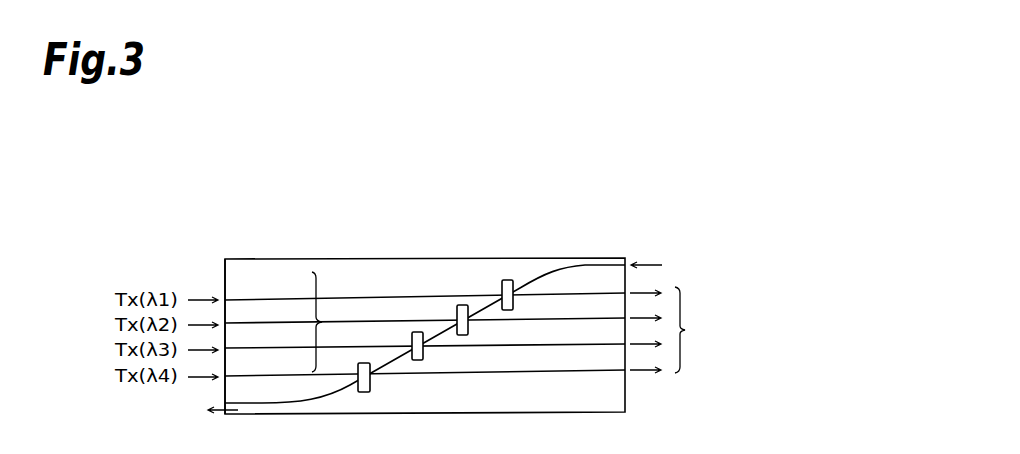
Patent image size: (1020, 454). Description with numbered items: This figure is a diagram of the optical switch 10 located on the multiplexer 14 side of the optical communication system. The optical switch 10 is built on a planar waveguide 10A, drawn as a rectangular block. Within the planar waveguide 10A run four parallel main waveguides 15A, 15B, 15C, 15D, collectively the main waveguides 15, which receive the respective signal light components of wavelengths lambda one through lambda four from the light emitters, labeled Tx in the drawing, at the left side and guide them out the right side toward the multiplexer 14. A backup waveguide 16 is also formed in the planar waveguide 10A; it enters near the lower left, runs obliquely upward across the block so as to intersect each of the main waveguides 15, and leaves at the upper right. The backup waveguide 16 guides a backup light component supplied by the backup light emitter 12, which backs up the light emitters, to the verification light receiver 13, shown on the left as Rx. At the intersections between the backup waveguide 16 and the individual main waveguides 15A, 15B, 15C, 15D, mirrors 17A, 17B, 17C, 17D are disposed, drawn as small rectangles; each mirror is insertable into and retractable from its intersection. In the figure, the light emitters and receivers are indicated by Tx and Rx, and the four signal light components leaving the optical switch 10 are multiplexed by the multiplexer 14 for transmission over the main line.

The optical switch 10 is at (572, 186).
The planar waveguide 10A is at (242, 259).
The backup light emitter 12 is at (723, 266).
The verification light receiver 13 is at (130, 416).
The multiplexer 14 is at (741, 330).
The main waveguides 15 is at (332, 322).
The main waveguide 15A is at (240, 294).
The main waveguide 15B is at (240, 322).
The main waveguide 15C is at (240, 350).
The main waveguide 15D is at (240, 377).
The backup waveguide 16 is at (605, 264).
The mirror 17A is at (507, 280).
The mirror 17B is at (462, 305).
The mirror 17C is at (417, 332).
The mirror 17D is at (363, 363).